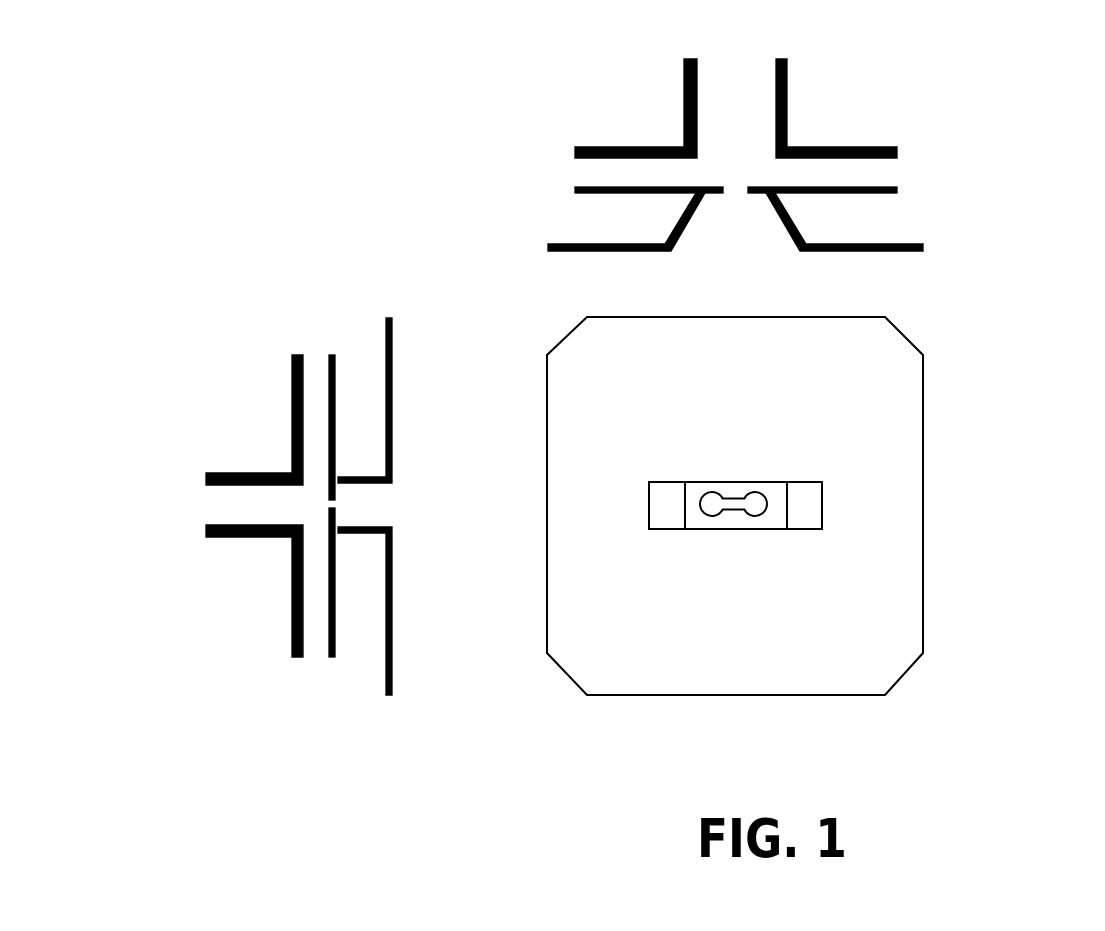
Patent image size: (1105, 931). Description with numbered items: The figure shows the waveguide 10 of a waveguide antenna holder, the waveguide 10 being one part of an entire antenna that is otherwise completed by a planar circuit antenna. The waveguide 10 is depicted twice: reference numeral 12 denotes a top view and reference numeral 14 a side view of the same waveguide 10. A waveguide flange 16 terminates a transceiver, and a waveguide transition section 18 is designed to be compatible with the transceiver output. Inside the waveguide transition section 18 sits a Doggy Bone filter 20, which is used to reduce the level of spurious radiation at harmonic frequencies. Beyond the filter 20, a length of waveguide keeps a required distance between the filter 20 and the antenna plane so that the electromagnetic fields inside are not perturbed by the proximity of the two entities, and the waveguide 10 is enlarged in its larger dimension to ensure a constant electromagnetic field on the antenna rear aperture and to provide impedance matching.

The waveguide 10 is at (719, 65).
The top view 12 is at (893, 104).
The side view 14 is at (248, 360).
The waveguide flange 16 is at (573, 148).
The waveguide transition section 18 is at (330, 503).
The Doggy Bone filter 20 is at (713, 508).